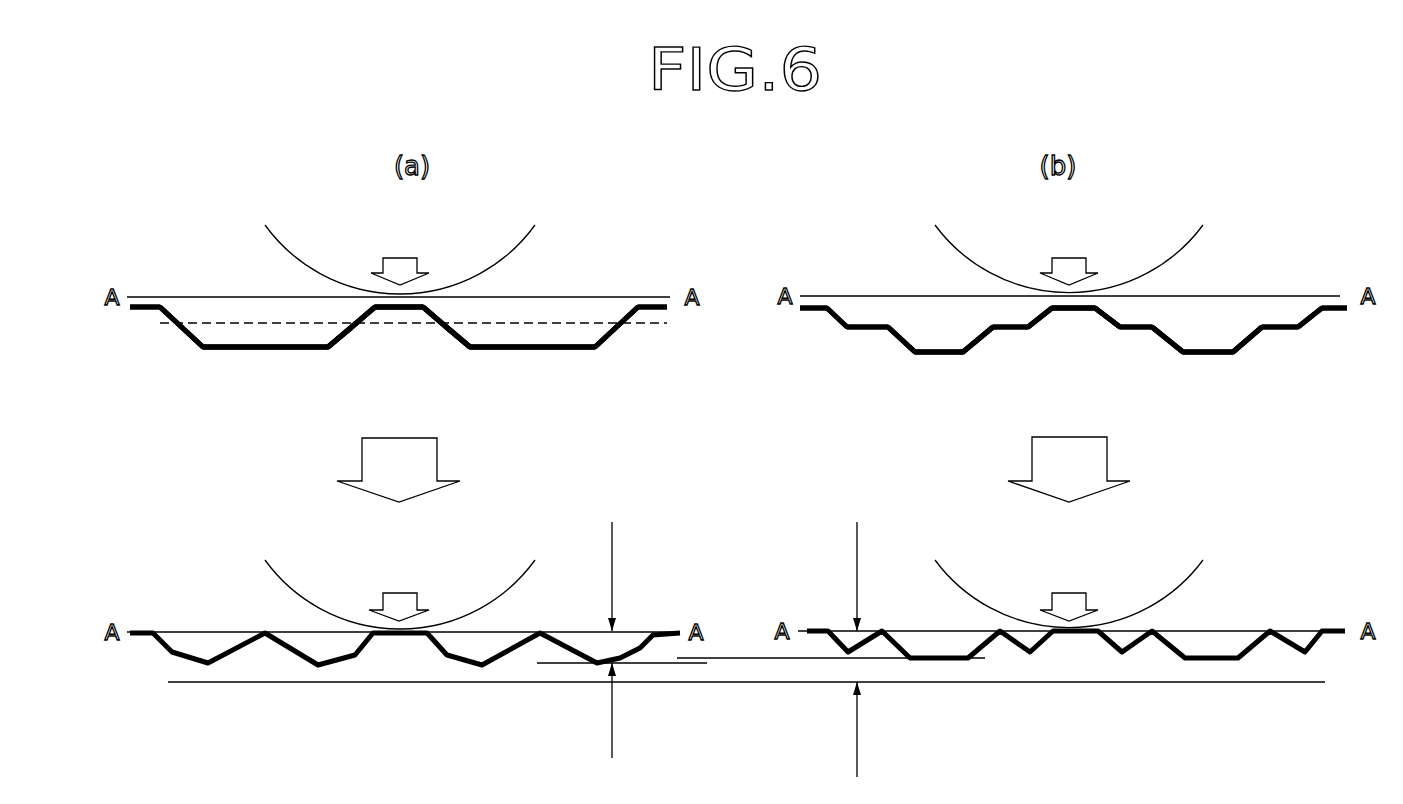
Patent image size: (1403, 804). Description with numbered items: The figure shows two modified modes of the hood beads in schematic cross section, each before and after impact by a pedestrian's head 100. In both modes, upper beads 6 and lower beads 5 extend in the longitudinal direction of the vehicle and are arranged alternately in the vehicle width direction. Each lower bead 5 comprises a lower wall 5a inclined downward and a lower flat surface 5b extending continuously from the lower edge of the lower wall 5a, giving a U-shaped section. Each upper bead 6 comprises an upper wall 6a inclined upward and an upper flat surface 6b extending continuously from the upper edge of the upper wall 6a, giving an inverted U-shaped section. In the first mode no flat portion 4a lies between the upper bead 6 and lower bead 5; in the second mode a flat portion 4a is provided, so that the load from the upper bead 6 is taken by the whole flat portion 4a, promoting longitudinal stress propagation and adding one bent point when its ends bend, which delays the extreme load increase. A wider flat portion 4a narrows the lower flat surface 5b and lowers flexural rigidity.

The pedestrian's head 100 is at (523, 239).
The upper bead 6 is at (612, 305).
The upper wall 6a is at (362, 318).
The upper flat surface 6b is at (413, 305).
The lower bead 5 is at (283, 365).
The lower wall 5a is at (180, 336).
The lower flat surface 5b is at (226, 351).
The flat portion 4a is at (866, 331).